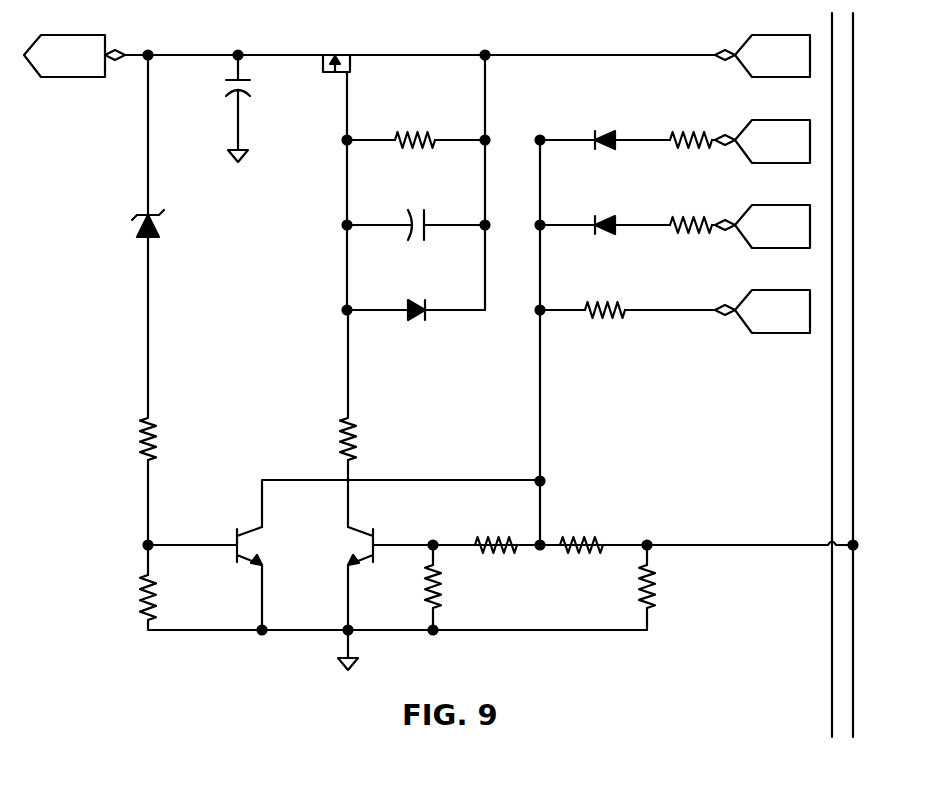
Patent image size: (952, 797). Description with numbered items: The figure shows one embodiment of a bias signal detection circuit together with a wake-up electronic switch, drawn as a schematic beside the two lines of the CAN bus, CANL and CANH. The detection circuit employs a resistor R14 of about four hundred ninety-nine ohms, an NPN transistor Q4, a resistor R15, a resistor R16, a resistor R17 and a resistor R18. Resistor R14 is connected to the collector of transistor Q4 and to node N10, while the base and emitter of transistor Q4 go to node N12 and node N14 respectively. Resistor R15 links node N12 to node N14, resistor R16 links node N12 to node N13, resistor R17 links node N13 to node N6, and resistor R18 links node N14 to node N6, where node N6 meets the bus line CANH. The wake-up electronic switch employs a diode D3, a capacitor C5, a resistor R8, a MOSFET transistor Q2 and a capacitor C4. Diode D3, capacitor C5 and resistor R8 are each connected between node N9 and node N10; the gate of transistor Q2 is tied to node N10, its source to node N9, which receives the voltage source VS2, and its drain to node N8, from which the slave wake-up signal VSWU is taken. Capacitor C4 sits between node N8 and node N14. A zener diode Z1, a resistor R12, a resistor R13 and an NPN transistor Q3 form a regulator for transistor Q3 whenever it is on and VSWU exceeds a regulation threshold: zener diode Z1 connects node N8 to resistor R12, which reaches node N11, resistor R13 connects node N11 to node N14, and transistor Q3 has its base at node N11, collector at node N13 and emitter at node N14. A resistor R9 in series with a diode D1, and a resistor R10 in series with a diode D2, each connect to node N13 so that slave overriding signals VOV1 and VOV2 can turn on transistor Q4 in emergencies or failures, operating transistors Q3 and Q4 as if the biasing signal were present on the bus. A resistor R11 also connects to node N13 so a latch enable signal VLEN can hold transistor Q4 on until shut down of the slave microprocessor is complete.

The MOSFET transistor Q2 is at (334, 53).
The capacitor C4 is at (223, 107).
The zener diode Z1 is at (132, 223).
The resistor R8 is at (416, 130).
The capacitor C5 is at (416, 217).
The diode D3 is at (416, 302).
The diode D1 is at (605, 132).
The diode D2 is at (605, 217).
The resistor R9 is at (691, 132).
The resistor R10 is at (691, 216).
The resistor R11 is at (605, 301).
The resistor R12 is at (130, 439).
The resistor R13 is at (130, 597).
The resistor R14 is at (329, 439).
The resistor R15 is at (449, 586).
The resistor R16 is at (496, 535).
The resistor R17 is at (581, 535).
The resistor R18 is at (666, 586).
The NPN transistor Q3 is at (256, 546).
The NPN transistor Q4 is at (354, 546).
The node N6 is at (647, 539).
The node N8 is at (152, 49).
The node N9 is at (487, 49).
The node N10 is at (331, 312).
The node N11 is at (128, 546).
The node N12 is at (432, 539).
The node N13 is at (559, 483).
The node N14 is at (432, 642).
The CAN bus low line CANL is at (824, 484).
The CAN bus high line CANH is at (862, 484).
The slave wake-up signal VSWU is at (74, 56).
The voltage source VS2 is at (762, 56).
The slave overriding signal VOV1 is at (762, 141).
The slave overriding signal VOV2 is at (762, 226).
The latch enable signal VLEN is at (762, 311).